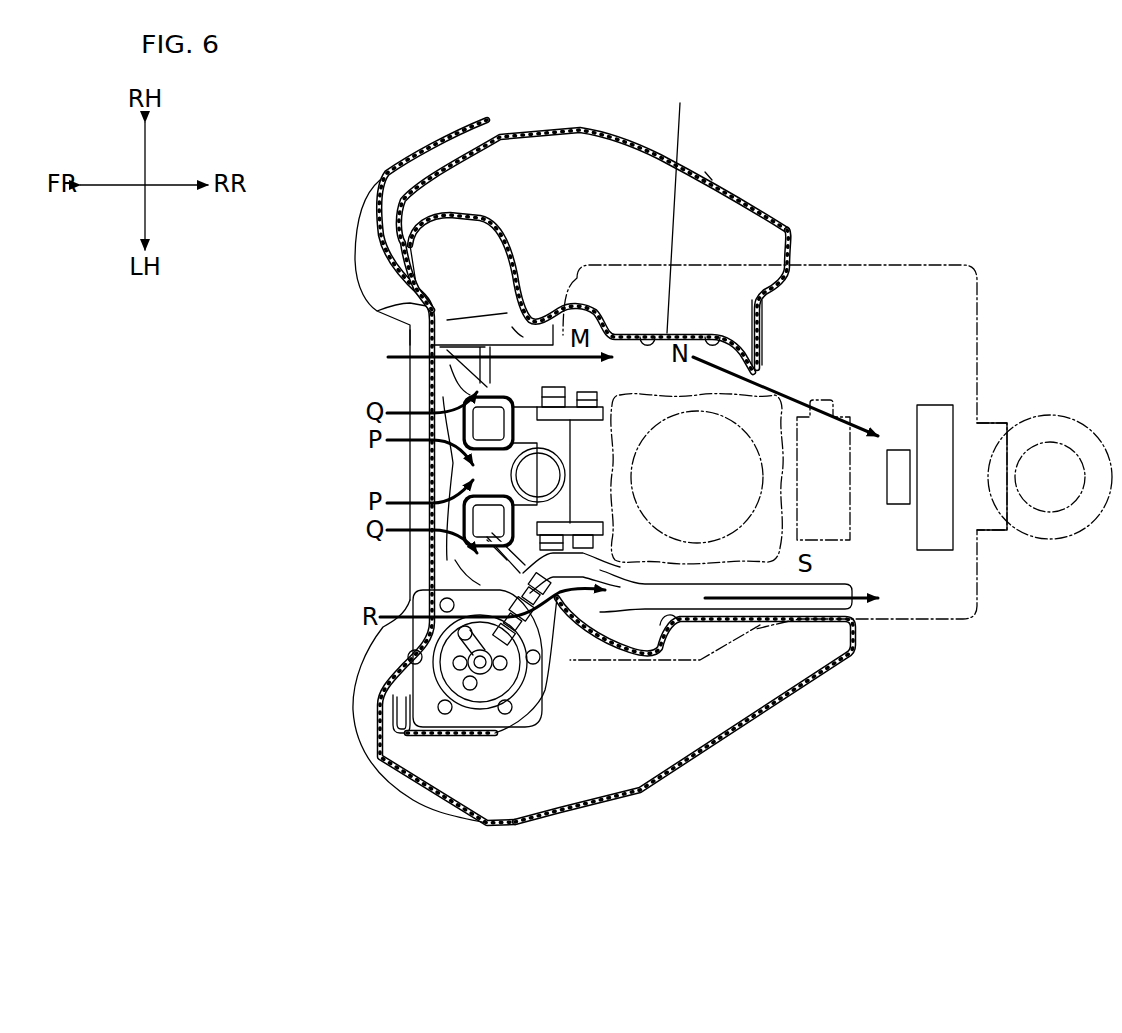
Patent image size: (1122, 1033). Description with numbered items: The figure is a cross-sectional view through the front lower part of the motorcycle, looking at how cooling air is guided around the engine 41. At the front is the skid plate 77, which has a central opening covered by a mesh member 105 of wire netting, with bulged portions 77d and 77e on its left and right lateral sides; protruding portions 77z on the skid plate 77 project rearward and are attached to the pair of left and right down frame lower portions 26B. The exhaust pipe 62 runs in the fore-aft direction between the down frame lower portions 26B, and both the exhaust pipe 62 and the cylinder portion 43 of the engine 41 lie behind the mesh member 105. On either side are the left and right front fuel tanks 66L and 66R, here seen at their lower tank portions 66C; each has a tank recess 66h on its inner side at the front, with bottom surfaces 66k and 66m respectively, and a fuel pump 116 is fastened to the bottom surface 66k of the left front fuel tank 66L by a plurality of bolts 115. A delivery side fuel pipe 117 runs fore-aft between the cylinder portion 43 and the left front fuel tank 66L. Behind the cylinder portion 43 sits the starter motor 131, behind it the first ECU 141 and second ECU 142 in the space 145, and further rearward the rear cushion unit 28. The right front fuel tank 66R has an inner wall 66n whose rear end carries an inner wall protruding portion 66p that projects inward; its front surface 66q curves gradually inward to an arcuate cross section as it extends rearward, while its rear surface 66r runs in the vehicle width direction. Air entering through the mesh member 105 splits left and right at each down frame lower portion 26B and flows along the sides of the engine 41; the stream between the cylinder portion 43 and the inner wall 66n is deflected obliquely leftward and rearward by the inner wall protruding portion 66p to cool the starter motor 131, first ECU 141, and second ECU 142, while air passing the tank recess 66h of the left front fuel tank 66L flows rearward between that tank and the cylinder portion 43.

The skid plate 77 is at (390, 168).
The bulged portion 77e is at (353, 236).
The bulged portion 77d is at (357, 681).
The protruding portions 77z is at (453, 377).
The tank recess 66h is at (455, 240).
The bottom surface 66m is at (482, 247).
The lower tank portion 66C is at (593, 163).
The inner wall 66n is at (730, 812).
The right front fuel tank 66R is at (703, 170).
The left front fuel tank 66L is at (722, 754).
The bottom surface 66k is at (390, 722).
The front surface 66q is at (715, 333).
The inner wall protruding portion 66p is at (770, 312).
The rear surface 66r is at (760, 347).
The engine 41 is at (723, 258).
The cylinder portion 43 is at (767, 397).
The down frame lower portions 26B is at (437, 351).
The mesh member 105 is at (410, 397).
The exhaust pipe 62 is at (453, 463).
The bolts 115 is at (445, 605).
The fuel pump 116 is at (487, 684).
The delivery side fuel pipe 117 is at (577, 582).
The starter motor 131 is at (840, 545).
The first ECU 141 is at (890, 450).
The second ECU 142 is at (935, 405).
The space 145 is at (968, 450).
The rear cushion unit 28 is at (1047, 543).